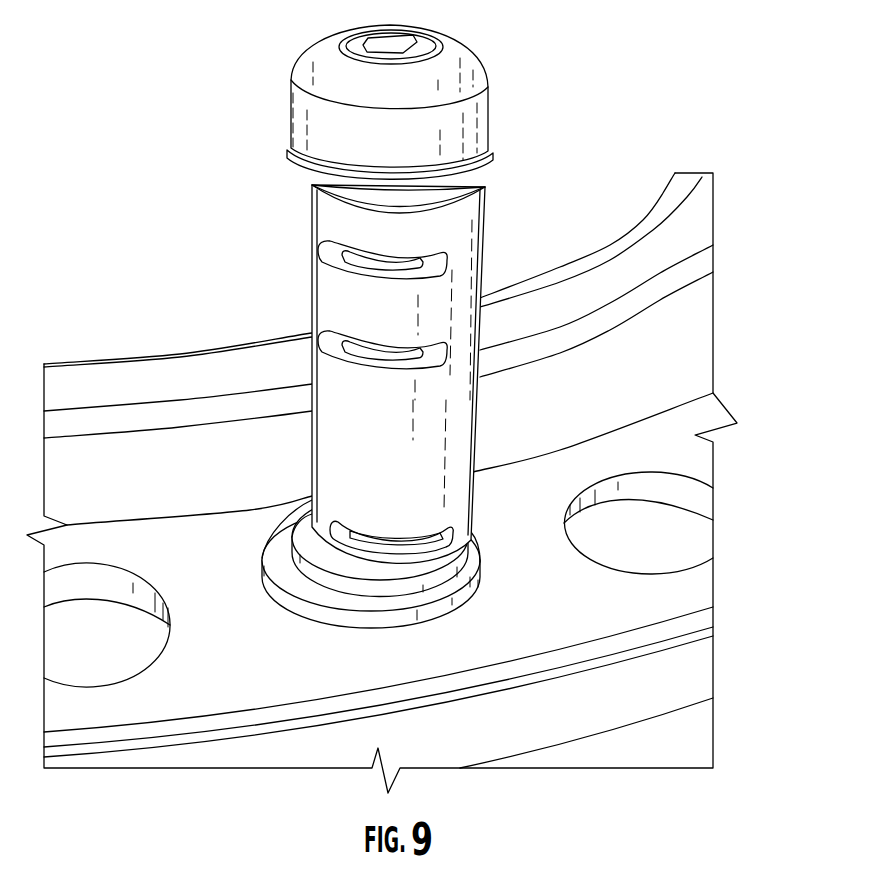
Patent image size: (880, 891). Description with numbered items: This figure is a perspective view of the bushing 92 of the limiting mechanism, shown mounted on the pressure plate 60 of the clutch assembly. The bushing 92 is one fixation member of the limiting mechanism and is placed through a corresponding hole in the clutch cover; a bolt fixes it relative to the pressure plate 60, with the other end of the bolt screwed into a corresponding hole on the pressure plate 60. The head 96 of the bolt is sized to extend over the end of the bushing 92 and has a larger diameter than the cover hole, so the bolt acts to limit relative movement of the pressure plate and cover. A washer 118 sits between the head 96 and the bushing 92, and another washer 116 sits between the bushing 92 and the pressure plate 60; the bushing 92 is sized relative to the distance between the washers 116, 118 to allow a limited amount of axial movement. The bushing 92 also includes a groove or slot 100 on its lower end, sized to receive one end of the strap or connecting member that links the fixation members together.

The pressure plate 60 is at (512, 663).
The bushing 92 is at (482, 343).
The head 96 is at (462, 73).
The groove or slot 100 is at (442, 262).
The washer 116 is at (468, 577).
The washer 118 is at (476, 172).